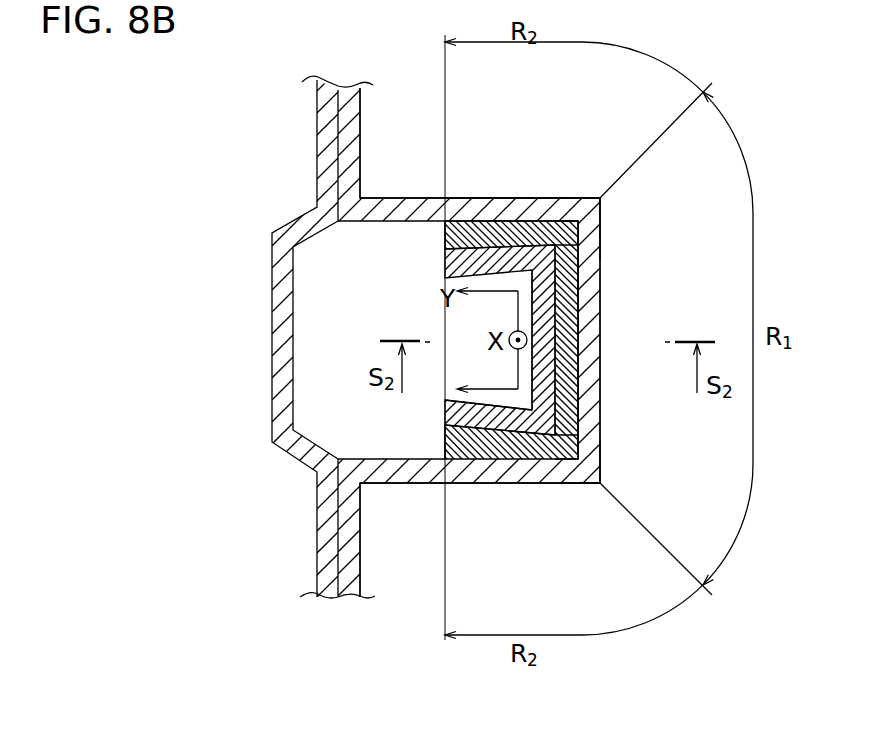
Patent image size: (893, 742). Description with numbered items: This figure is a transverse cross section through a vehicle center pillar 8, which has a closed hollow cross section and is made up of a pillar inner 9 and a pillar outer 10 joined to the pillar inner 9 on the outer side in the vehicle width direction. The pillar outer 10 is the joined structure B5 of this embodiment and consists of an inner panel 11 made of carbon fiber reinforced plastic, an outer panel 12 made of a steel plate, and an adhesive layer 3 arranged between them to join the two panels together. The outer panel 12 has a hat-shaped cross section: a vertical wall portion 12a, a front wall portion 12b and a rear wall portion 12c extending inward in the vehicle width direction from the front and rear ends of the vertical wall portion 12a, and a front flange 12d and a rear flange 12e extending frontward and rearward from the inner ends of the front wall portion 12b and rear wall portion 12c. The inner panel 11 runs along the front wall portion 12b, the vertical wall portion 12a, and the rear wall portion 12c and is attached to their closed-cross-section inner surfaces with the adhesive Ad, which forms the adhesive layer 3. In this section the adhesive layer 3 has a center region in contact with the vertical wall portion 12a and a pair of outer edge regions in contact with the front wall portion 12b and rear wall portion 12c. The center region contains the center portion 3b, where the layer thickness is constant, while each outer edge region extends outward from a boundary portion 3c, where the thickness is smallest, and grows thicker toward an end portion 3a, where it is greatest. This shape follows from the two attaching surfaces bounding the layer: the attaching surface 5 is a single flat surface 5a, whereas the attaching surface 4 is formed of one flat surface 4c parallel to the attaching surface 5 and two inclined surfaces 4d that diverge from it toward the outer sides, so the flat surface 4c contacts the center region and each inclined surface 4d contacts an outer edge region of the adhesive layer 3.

The adhesive layer 3 is at (434, 432).
The end portion 3a is at (445, 222).
The center portion 3b is at (579, 348).
The boundary portion 3c is at (574, 237).
The attaching surface 4 is at (434, 254).
The flat surface 4c is at (548, 365).
The inclined surface 4d is at (487, 248).
The attaching surface 5 is at (531, 198).
The flat surface 5a is at (563, 277).
The center pillar 8 is at (534, 94).
The pillar inner 9 is at (285, 208).
The pillar outer 10 is at (552, 186).
The inner panel 11 is at (445, 404).
The outer panel 12 is at (350, 590).
The vertical wall portion 12a is at (600, 320).
The front wall portion 12b is at (440, 198).
The rear wall portion 12c is at (540, 483).
The front flange 12d is at (360, 106).
The rear flange 12e is at (358, 582).
The adhesive Ad is at (576, 415).
The joined structure B5 is at (578, 510).